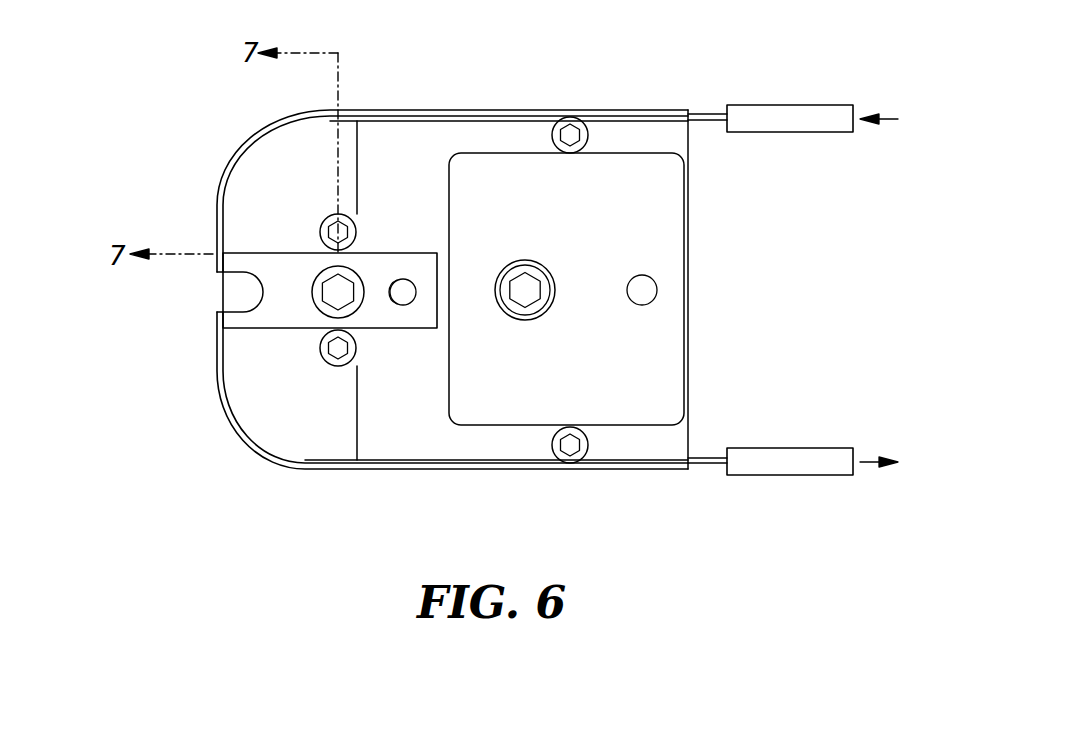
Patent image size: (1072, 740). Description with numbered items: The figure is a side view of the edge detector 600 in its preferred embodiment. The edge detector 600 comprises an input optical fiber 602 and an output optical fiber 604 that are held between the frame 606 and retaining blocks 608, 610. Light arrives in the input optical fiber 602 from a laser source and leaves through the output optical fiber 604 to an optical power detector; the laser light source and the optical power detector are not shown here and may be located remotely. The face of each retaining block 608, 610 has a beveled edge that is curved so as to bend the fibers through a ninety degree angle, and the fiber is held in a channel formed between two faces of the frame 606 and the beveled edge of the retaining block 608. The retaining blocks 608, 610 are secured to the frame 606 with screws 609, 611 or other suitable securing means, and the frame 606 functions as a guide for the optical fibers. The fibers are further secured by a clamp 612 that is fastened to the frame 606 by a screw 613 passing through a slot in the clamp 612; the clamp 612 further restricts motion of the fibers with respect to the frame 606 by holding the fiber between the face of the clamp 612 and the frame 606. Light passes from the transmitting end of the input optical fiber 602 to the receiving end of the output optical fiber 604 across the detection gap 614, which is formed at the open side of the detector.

The edge detector 600 is at (523, 533).
The input optical fiber 602 is at (758, 105).
The output optical fiber 604 is at (759, 475).
The frame 606 is at (482, 168).
The retaining block 608 is at (272, 156).
The screw 609 is at (318, 234).
The housing lower portion 610 is at (273, 423).
The screw 611 is at (318, 352).
The clamp 612 is at (282, 318).
The screw 613 is at (362, 307).
The detection gap 614 is at (200, 278).